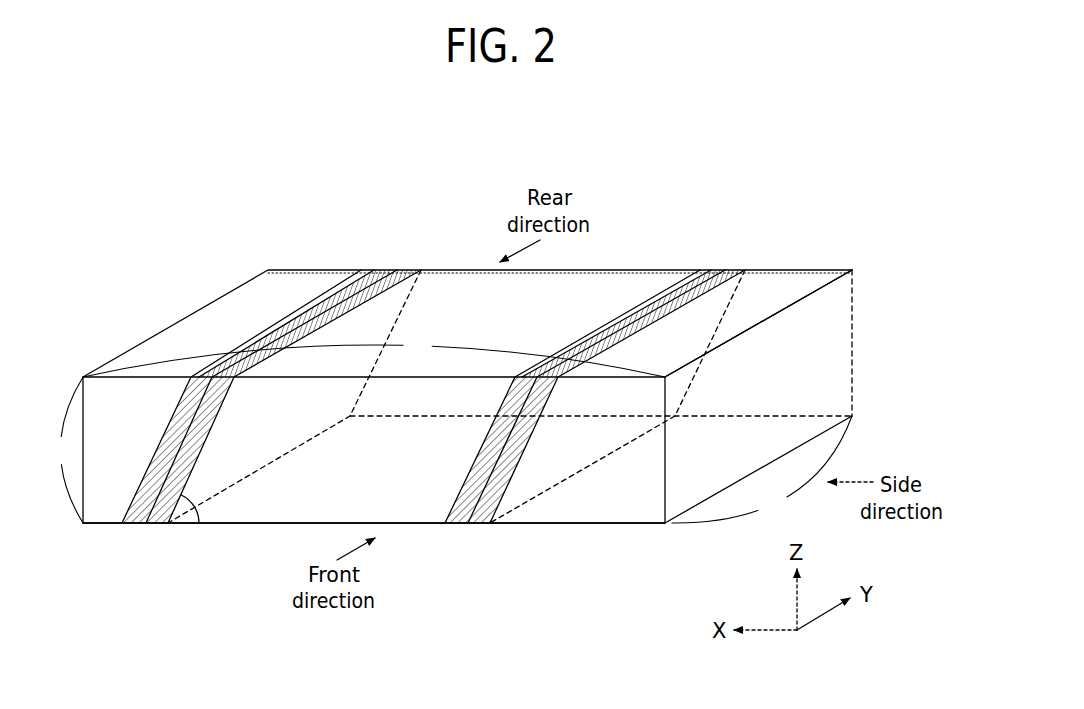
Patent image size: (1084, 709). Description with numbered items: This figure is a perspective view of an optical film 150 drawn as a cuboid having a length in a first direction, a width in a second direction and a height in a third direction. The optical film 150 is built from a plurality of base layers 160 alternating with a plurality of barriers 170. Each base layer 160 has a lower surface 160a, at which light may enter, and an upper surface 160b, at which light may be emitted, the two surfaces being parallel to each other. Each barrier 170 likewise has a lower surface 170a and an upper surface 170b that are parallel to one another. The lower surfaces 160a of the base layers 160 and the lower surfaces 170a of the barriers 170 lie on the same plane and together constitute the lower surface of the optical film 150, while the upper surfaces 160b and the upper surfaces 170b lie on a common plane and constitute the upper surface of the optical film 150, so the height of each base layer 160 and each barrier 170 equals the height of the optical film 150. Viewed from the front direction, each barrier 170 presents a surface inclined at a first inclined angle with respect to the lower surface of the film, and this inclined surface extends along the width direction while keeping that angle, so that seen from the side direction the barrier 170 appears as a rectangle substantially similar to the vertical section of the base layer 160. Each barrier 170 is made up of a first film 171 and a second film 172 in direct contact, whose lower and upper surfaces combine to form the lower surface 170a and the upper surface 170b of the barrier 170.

The optical film 150 is at (436, 212).
The base layer 160 is at (98, 510).
The lower surface of the base layer 160a is at (630, 525).
The upper surface of the base layer 160b is at (770, 290).
The barrier 170 is at (175, 587).
The lower surface of the barrier 170a is at (465, 524).
The upper surface of the barrier 170b is at (660, 290).
The first film 171 is at (140, 513).
The second film 172 is at (160, 513).